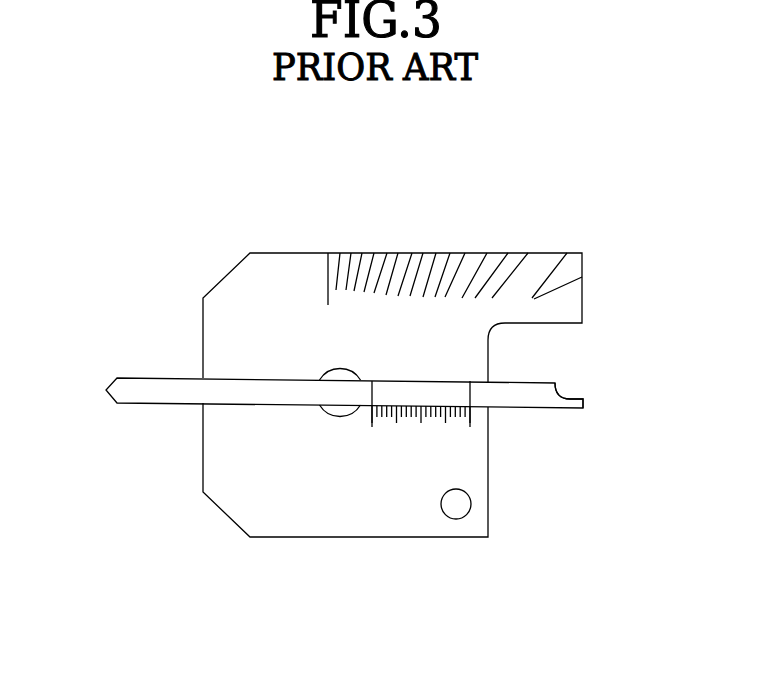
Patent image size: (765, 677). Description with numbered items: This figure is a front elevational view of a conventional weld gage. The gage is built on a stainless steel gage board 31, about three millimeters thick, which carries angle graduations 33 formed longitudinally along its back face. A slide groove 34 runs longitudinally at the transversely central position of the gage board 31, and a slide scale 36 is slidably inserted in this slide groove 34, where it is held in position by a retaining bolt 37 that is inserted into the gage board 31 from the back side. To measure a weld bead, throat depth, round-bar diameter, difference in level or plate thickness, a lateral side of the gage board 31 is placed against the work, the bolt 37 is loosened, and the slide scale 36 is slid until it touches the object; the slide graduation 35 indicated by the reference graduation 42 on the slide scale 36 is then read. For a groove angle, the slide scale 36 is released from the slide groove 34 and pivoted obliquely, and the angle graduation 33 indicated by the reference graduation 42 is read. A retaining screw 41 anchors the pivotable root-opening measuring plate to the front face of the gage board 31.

The gage board 31 is at (275, 252).
The angle graduations 33 is at (458, 265).
The slide groove 34 is at (228, 378).
The slide graduation 35 is at (420, 422).
The slide scale 36 is at (540, 395).
The retaining bolt 37 is at (337, 413).
The retaining screw 41 is at (458, 510).
The reference graduation 42 is at (472, 395).